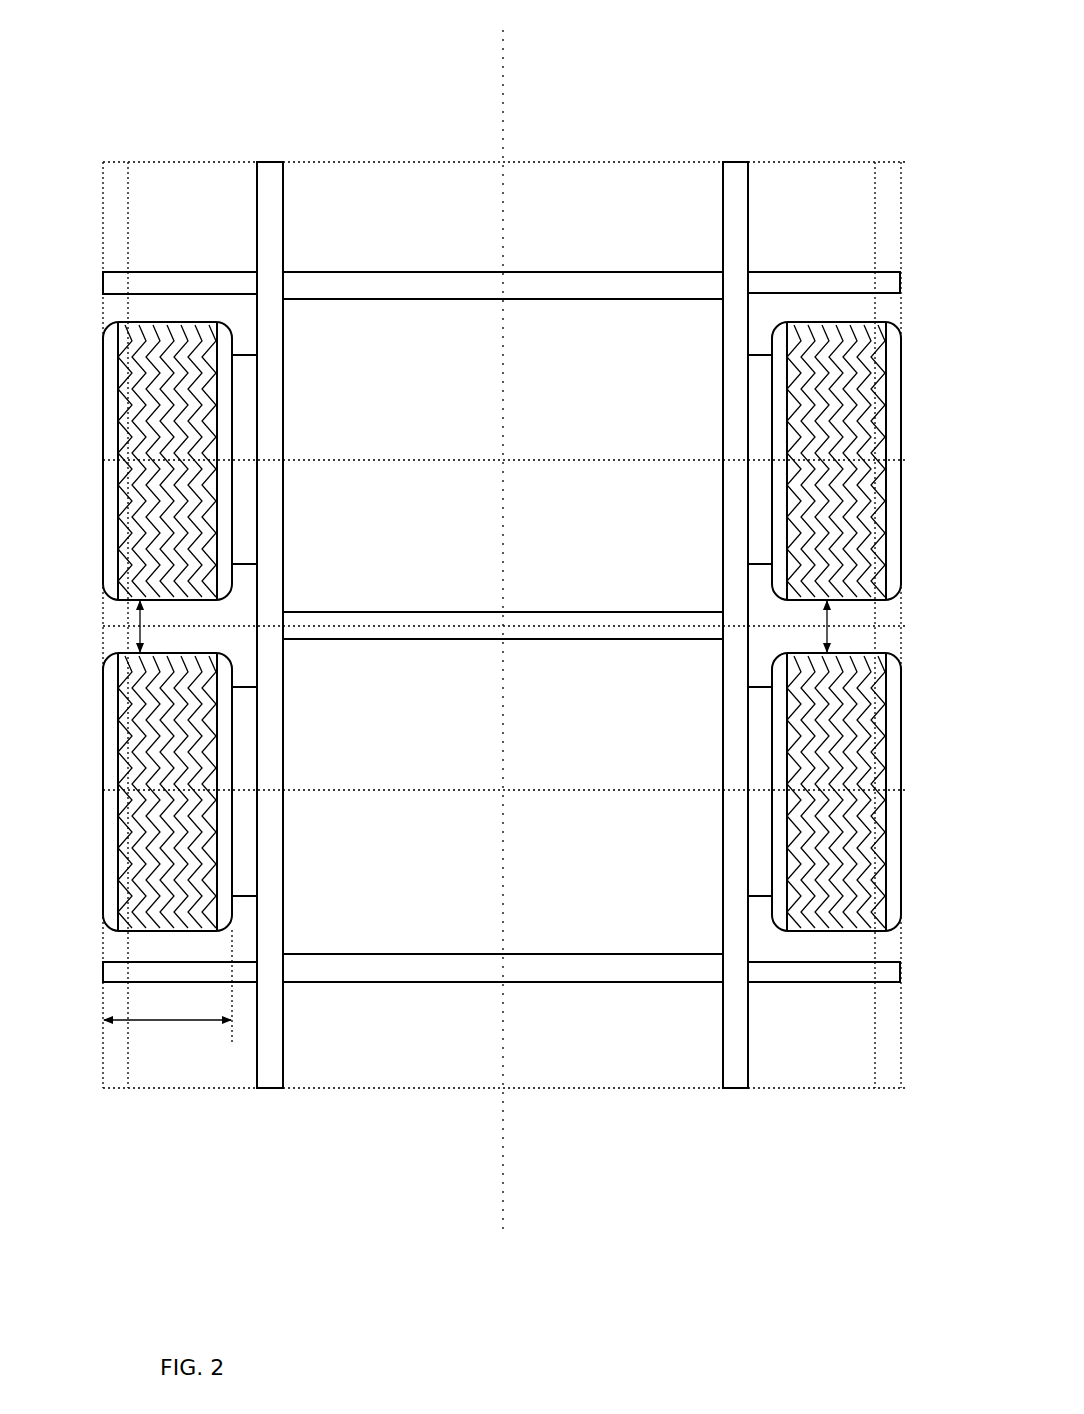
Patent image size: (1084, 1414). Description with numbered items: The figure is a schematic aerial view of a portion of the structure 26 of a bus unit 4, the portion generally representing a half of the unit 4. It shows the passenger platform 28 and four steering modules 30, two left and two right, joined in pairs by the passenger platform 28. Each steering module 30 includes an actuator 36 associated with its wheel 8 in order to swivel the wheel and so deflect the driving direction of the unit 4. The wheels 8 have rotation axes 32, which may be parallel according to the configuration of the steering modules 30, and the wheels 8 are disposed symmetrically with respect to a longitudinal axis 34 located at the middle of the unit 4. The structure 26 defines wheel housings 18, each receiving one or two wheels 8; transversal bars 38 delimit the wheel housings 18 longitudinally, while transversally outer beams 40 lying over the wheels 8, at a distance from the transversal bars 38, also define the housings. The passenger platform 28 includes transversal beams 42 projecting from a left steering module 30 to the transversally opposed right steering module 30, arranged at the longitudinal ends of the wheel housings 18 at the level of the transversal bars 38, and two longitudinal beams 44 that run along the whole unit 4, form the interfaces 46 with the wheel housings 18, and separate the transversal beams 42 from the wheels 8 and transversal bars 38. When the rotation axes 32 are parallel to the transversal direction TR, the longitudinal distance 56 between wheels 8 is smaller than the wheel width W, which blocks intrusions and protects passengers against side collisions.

The unit 4 is at (409, 30).
The wheel 8 is at (173, 557).
The wheel housing 18 is at (302, 596).
The structure 26 is at (599, 122).
The passenger platform 28 is at (438, 380).
The steering module 30 is at (302, 517).
The rotation axis 32 is at (538, 462).
The longitudinal axis 34 is at (503, 920).
The actuator 36 is at (240, 405).
The transversal bar 38 is at (187, 282).
The transversally outer beam 40 is at (113, 1082).
The transversal beam 42 is at (562, 284).
The longitudinal beam 44 is at (270, 162).
The interface 46 is at (302, 237).
The longitudinal distance 56 is at (505, 626).
The transversal direction TR is at (605, 628).
The width W is at (168, 987).